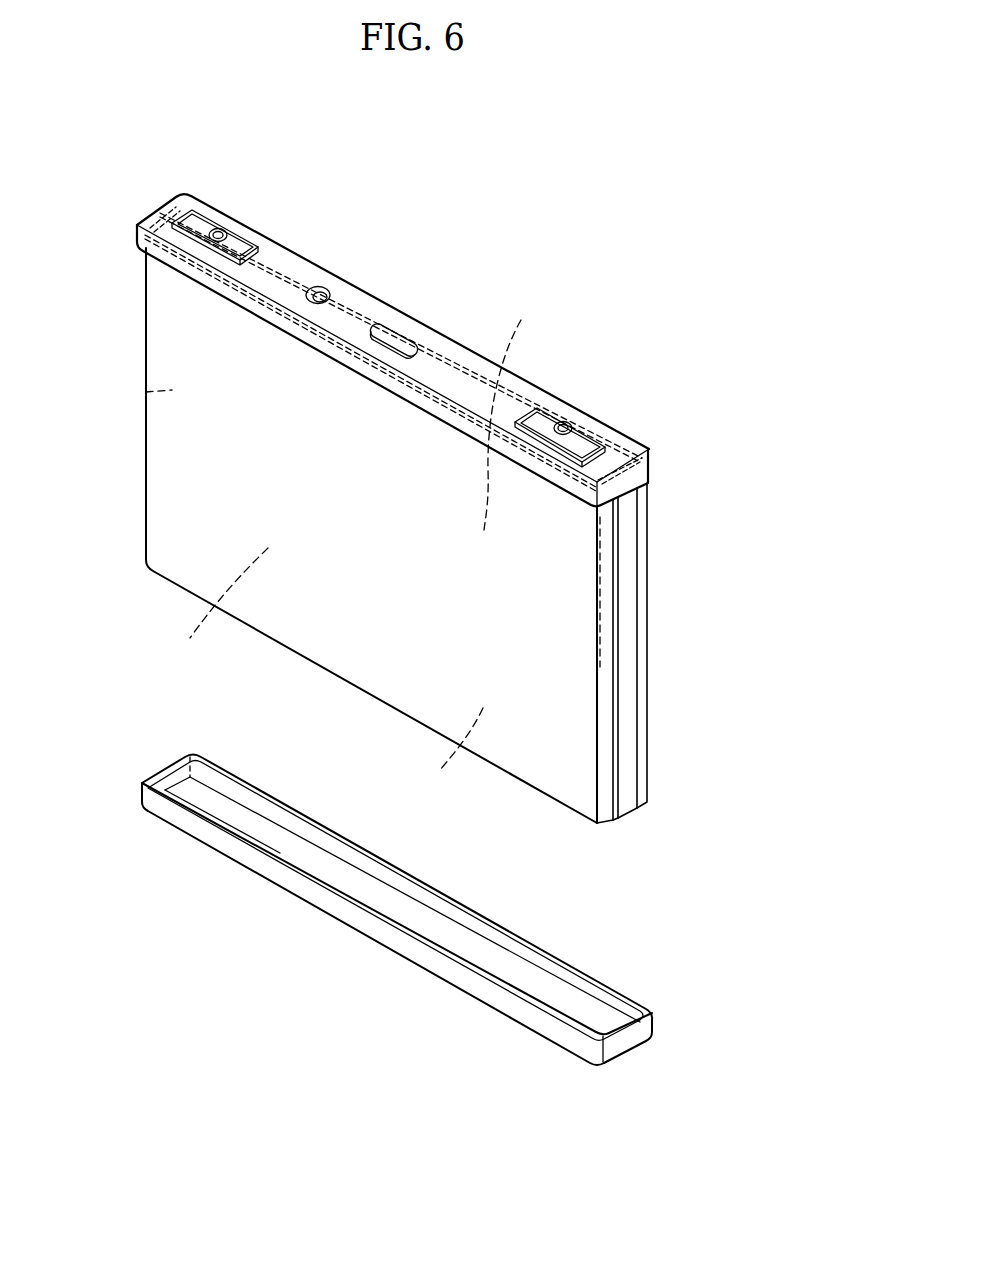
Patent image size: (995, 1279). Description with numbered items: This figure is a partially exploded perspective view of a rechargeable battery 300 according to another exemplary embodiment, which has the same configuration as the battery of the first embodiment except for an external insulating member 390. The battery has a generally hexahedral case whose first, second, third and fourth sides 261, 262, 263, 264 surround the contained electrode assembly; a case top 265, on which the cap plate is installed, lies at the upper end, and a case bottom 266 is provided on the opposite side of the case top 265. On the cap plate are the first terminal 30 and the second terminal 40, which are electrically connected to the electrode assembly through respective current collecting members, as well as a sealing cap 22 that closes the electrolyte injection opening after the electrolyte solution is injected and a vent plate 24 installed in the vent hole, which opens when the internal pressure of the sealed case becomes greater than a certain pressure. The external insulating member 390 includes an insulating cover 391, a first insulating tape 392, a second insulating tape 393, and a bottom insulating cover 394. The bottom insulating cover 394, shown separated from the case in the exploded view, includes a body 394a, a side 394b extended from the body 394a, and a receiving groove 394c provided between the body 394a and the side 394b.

The rechargeable battery 300 is at (508, 197).
The first terminal 30 is at (243, 242).
The second terminal 40 is at (581, 437).
The sealing cap 22 is at (320, 293).
The vent plate 24 is at (401, 333).
The case top 265 is at (350, 326).
The third side 263 is at (529, 316).
The fourth side 264 is at (146, 392).
The first side 261 is at (190, 638).
The second side 262 is at (603, 677).
The case bottom 266 is at (440, 771).
The external insulating member 390 is at (672, 440).
The insulating cover 391 is at (632, 426).
The first insulating tape 392 is at (604, 610).
The second insulating tape 393 is at (636, 560).
The bottom insulating cover 394 is at (648, 1004).
The body 394a is at (592, 1008).
The side 394b is at (632, 1045).
The receiving groove 394c is at (533, 990).